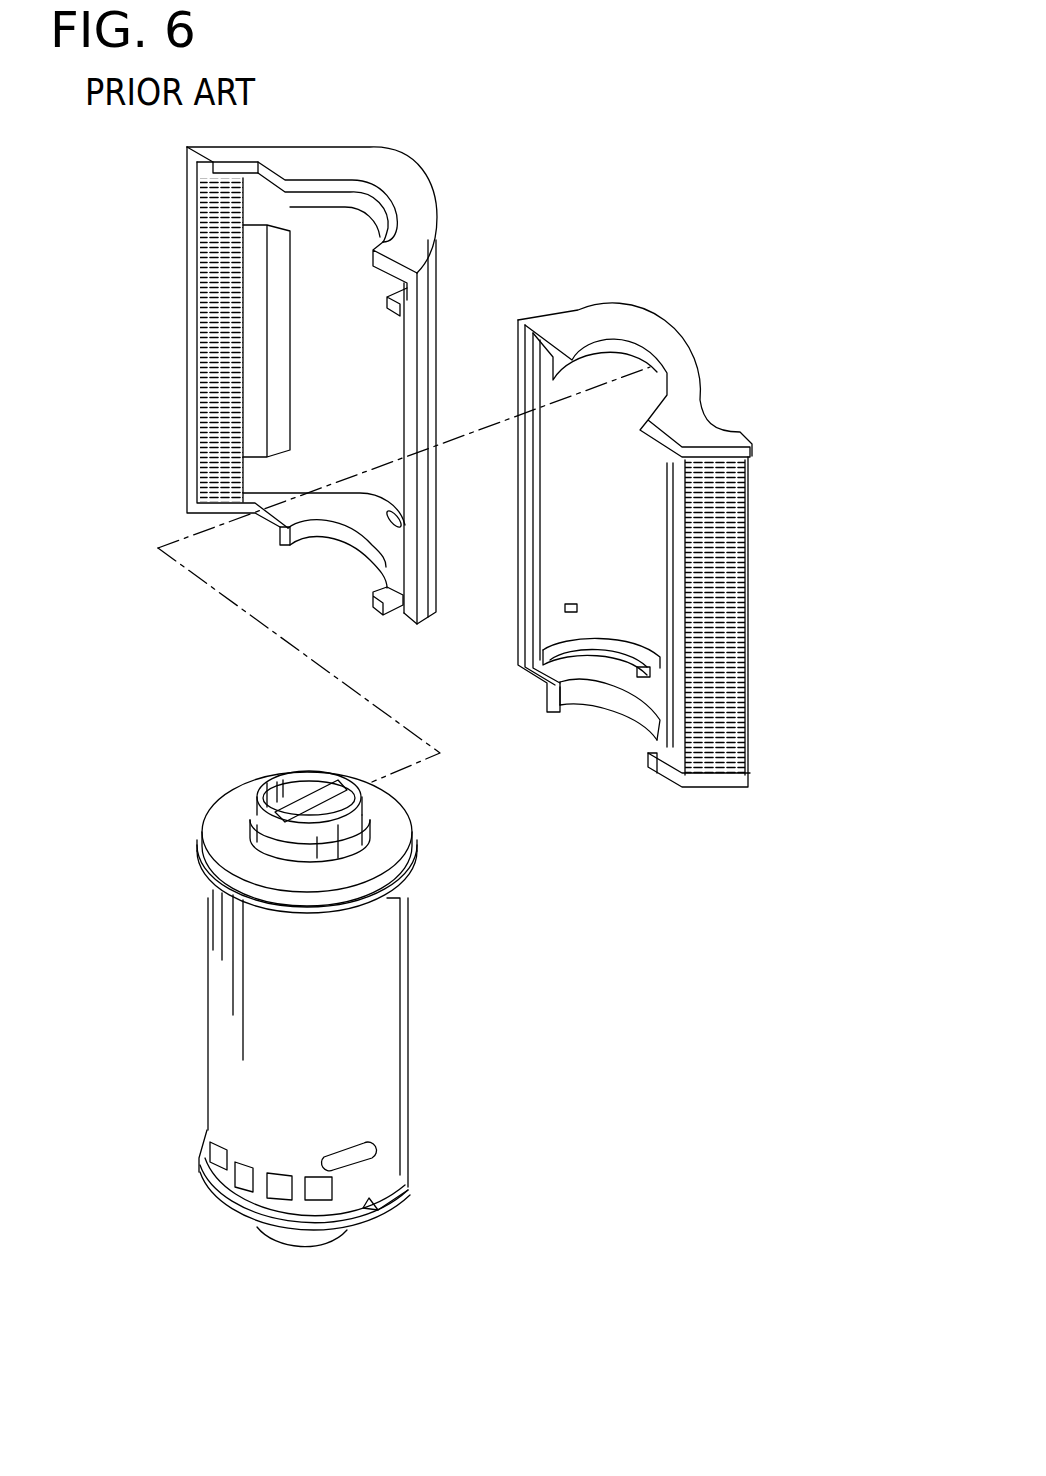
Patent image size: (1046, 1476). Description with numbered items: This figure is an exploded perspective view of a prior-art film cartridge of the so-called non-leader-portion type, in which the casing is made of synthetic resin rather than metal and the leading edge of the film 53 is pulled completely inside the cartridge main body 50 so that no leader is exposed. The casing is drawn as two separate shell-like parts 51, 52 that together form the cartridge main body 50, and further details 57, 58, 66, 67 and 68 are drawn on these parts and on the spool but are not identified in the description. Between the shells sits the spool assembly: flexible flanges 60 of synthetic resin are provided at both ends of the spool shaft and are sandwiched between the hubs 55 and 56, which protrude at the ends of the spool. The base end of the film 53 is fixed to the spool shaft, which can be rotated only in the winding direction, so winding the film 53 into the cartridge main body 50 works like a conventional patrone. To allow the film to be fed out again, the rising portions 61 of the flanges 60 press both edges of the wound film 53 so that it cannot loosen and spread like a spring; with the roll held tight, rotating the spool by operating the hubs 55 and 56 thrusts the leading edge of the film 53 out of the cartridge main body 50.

The cartridge main body 50 is at (489, 270).
The first shell half 51 is at (330, 162).
The second shell half 52 is at (666, 342).
The film 53 is at (225, 1073).
The hub 55 is at (275, 775).
The hub 56 is at (303, 1242).
The light shielding fabric 57 is at (205, 257).
The film passage mouth 58 is at (168, 388).
The flexible flange 60 is at (228, 808).
The rising portion 61 is at (400, 887).
The slot 66 is at (370, 1153).
The projection 67 is at (570, 612).
The claw 68 is at (390, 1202).